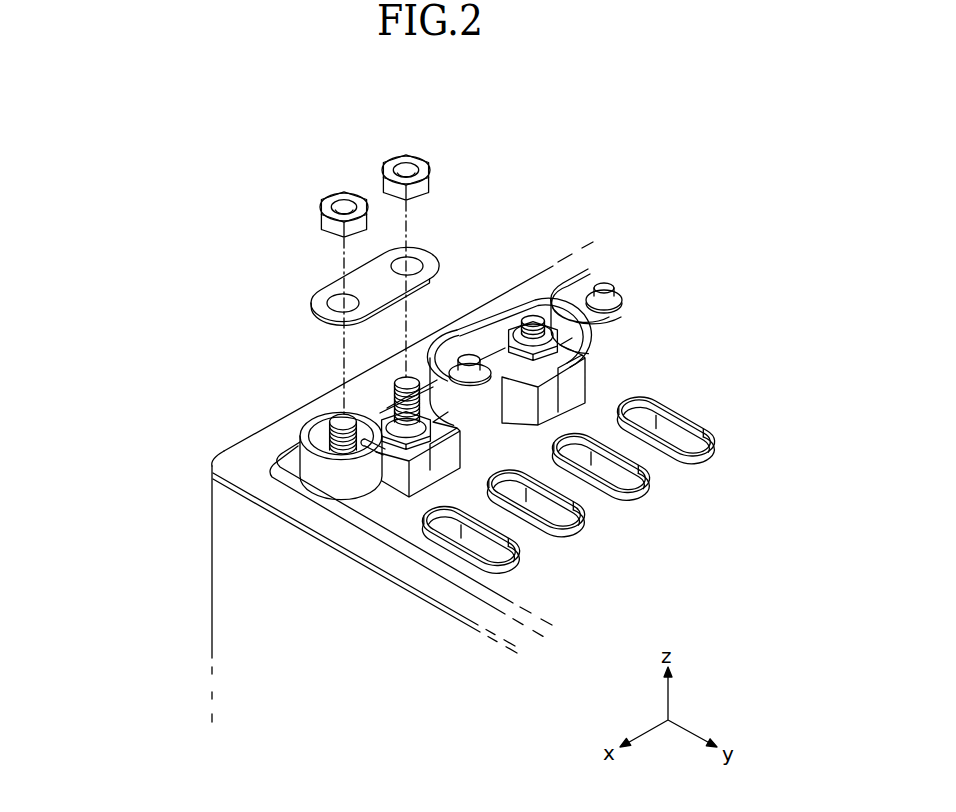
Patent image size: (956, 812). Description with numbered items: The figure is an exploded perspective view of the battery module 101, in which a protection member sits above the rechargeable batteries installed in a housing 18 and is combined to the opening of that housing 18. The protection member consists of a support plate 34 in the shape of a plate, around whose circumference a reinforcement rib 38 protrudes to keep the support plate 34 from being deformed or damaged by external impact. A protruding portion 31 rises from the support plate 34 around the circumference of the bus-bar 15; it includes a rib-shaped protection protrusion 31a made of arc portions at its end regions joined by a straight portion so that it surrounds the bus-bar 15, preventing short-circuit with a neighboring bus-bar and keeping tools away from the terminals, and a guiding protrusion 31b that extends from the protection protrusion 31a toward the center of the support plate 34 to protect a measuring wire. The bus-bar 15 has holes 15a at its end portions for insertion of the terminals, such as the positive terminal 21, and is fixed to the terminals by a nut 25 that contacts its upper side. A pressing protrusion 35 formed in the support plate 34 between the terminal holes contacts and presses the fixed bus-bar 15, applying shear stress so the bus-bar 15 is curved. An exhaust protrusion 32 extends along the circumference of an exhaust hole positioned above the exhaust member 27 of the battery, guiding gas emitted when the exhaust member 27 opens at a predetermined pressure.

The battery module 101 is at (530, 157).
The nut 25 is at (328, 203).
The bus-bar 15 is at (368, 266).
The hole 15a is at (338, 301).
The pressing protrusion 35 is at (367, 417).
The positive terminal 21 is at (333, 402).
The protection protrusion 31a is at (308, 418).
The protruding portion 31 is at (266, 436).
The guiding protrusion 31b is at (390, 483).
The housing 18 is at (247, 612).
The reinforcement rib 38 is at (377, 532).
The support plate 34 is at (410, 573).
The exhaust protrusion 32 is at (468, 556).
The exhaust member 27 is at (497, 540).